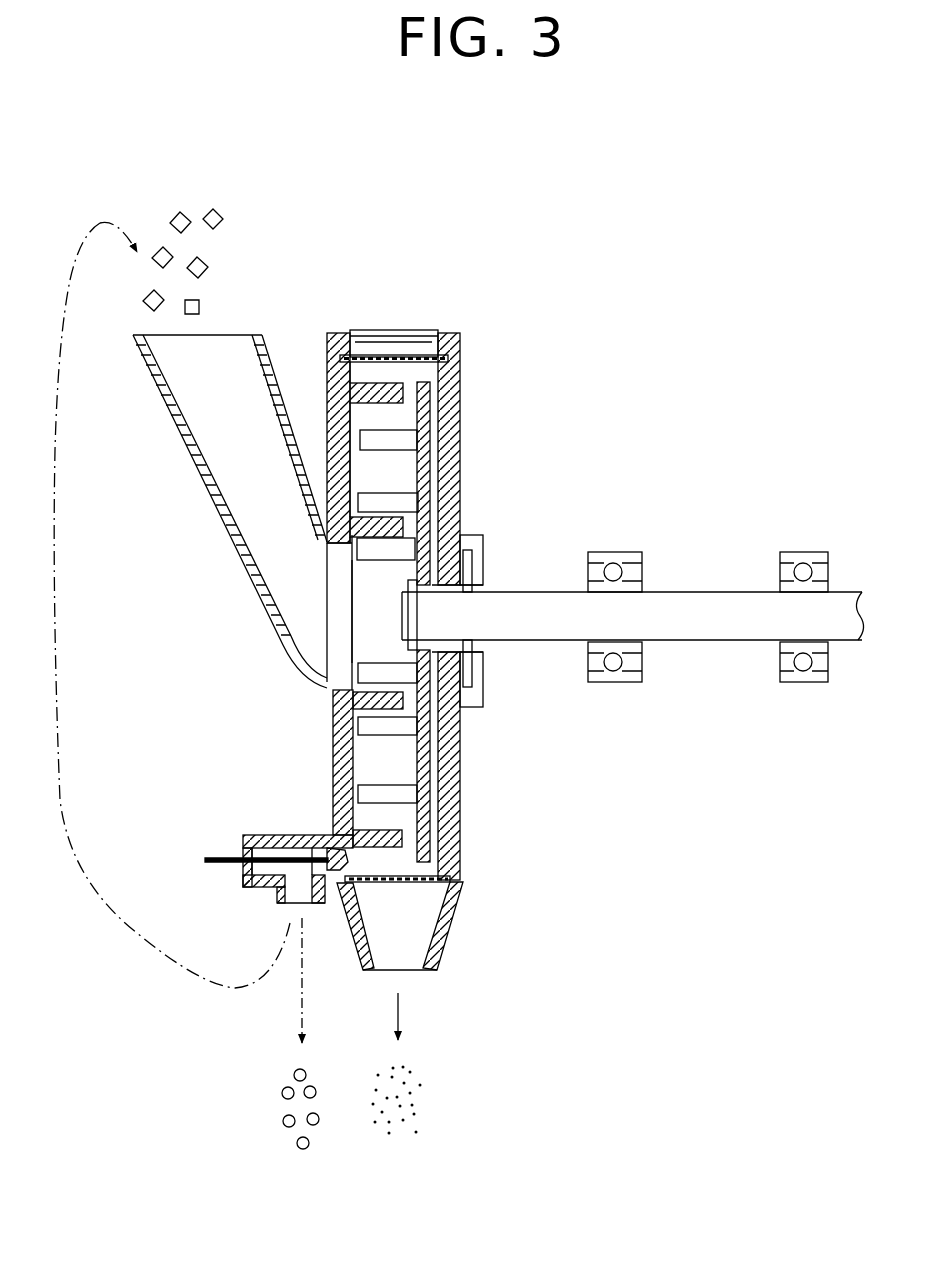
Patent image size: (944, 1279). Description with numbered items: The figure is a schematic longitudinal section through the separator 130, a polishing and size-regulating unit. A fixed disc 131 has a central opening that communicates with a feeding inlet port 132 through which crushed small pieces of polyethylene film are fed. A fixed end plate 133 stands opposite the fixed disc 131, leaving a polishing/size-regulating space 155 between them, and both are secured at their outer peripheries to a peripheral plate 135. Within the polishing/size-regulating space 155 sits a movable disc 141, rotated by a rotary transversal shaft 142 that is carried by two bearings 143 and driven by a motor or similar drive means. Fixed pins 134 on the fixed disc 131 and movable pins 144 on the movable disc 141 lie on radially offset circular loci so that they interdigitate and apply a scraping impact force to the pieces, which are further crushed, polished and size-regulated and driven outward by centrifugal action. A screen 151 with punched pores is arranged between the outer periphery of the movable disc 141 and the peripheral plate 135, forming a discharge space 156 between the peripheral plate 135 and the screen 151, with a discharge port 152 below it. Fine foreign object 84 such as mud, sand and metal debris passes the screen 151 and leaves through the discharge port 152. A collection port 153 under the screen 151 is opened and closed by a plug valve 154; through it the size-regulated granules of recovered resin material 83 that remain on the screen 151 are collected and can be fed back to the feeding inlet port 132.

The separator 130 is at (432, 325).
The fixed disc 131 is at (325, 392).
The feeding inlet port 132 is at (210, 432).
The fixed end plate 133 is at (442, 422).
The fixed pins 134 is at (393, 530).
The peripheral plate 135 is at (407, 330).
The movable disc 141 is at (428, 727).
The rotary transversal shaft 142 is at (700, 625).
The bearings 143 is at (602, 683).
The movable pins 144 is at (410, 660).
The screen 151 is at (445, 357).
The discharge port 152 is at (407, 943).
The collection port 153 is at (300, 907).
The plug valve 154 is at (218, 853).
The polishing/size-regulating space 155 is at (370, 575).
The discharge space 156 is at (363, 345).
The recovered resin material 83 is at (278, 1113).
The foreign object 84 is at (420, 1106).